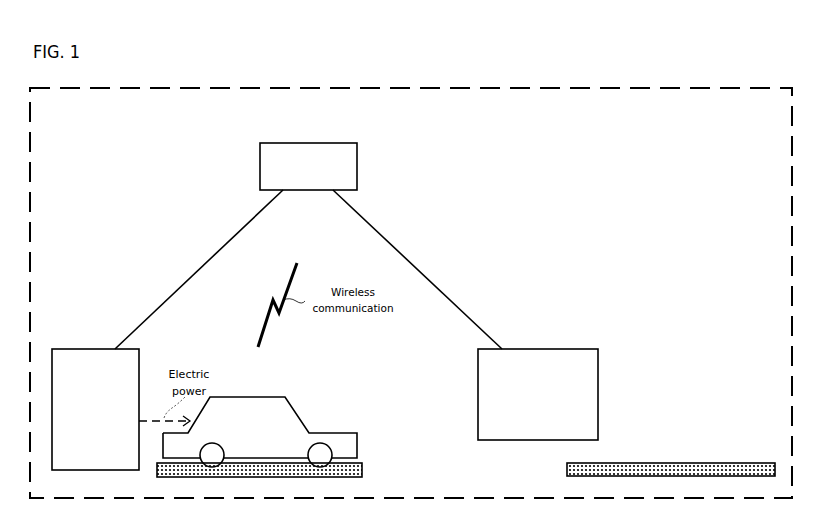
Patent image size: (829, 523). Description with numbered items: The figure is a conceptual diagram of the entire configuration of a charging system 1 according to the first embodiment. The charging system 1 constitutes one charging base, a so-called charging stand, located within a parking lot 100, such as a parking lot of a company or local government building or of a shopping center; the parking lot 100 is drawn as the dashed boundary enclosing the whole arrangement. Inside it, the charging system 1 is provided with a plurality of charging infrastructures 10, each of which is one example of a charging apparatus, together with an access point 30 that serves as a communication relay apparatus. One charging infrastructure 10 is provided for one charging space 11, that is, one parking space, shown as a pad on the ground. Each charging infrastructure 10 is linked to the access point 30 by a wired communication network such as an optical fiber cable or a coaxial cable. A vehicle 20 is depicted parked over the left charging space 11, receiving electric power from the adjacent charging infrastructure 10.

The charging system 1 is at (466, 124).
The charging infrastructure 10 is at (78, 349).
The charging space 11 is at (364, 469).
The vehicle 20 is at (319, 433).
The access point 30 is at (285, 143).
The parking lot 100 is at (792, 182).